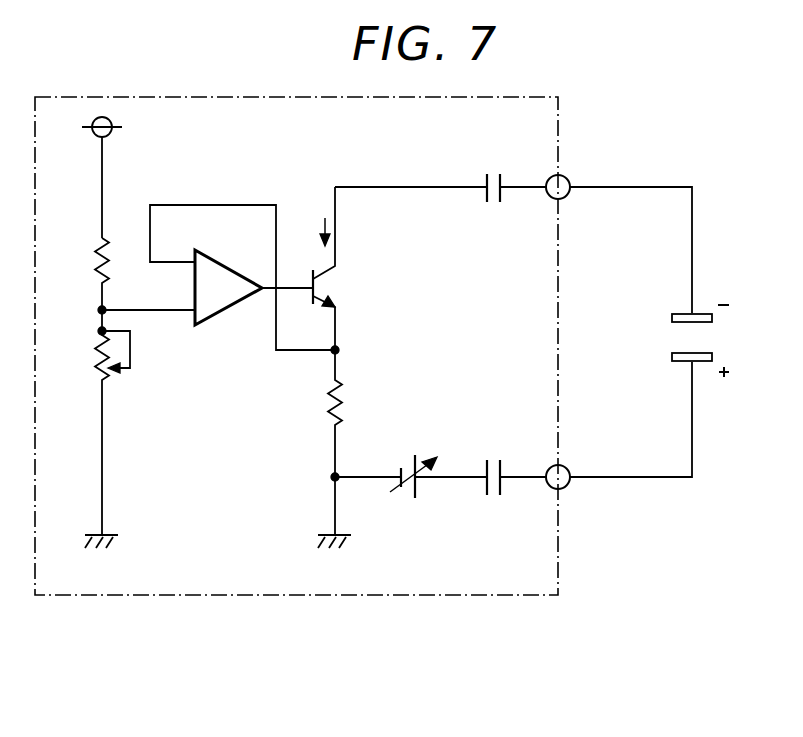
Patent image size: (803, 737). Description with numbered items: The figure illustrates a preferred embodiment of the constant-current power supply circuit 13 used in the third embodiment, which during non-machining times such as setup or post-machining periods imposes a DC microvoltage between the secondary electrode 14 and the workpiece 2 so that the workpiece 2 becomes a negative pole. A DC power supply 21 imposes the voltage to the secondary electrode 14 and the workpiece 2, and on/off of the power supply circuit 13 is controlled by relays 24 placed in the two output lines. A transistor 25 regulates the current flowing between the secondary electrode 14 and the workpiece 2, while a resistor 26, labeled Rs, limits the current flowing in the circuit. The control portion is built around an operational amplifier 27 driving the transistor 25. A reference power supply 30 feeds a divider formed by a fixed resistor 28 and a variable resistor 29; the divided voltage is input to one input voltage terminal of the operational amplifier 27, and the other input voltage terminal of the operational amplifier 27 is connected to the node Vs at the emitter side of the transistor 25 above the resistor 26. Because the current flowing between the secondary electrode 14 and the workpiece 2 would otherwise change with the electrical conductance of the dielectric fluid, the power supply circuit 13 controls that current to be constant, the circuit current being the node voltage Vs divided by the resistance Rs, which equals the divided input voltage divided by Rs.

The workpiece 2 is at (683, 312).
The power supply circuit 13 is at (518, 597).
The secondary electrode 14 is at (683, 364).
The DC power supply 21 is at (406, 456).
The relays 24 is at (490, 203).
The transistor 25 is at (342, 272).
The resistor 26 is at (340, 389).
The operational amplifier 27 is at (232, 312).
The fixed resistor 28 is at (96, 249).
The variable resistor 29 is at (98, 368).
The reference power supply 30 is at (113, 122).